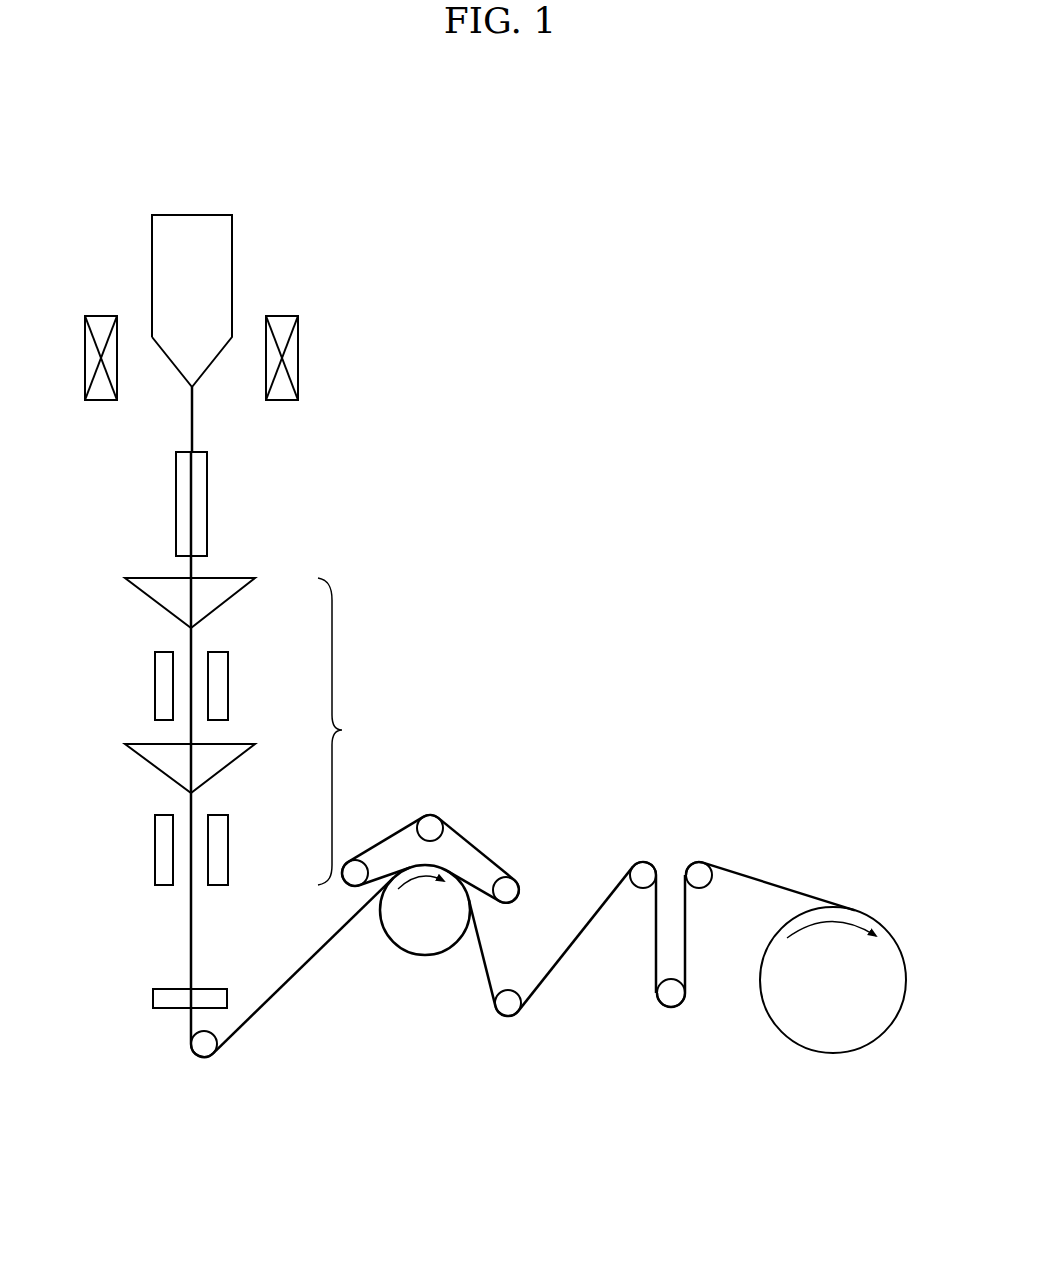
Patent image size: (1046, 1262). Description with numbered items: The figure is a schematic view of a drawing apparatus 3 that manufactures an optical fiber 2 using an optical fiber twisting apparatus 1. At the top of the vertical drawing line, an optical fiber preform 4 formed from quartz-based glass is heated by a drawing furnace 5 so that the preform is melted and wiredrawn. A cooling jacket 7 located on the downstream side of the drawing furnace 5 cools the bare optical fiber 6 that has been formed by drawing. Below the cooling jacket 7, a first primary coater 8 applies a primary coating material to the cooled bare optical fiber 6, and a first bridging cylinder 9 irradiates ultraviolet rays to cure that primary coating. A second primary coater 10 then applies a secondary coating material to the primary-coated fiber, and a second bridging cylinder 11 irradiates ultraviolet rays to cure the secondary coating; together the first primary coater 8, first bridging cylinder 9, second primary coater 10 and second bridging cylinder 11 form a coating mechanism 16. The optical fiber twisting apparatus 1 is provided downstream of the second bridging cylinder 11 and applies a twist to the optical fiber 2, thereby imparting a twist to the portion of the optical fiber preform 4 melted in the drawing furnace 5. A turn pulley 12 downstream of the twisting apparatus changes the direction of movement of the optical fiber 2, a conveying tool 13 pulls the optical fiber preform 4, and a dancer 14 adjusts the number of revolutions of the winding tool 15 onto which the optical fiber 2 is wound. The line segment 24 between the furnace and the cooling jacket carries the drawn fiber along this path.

The optical fiber twisting apparatus 1 is at (208, 988).
The optical fiber 2 is at (188, 928).
The drawing apparatus 3 is at (480, 598).
The optical fiber preform 4 is at (232, 265).
The drawing furnace 5 is at (298, 355).
The bare optical fiber 6 is at (193, 415).
The cooling jacket 7 is at (207, 498).
The first primary coater 8 is at (243, 590).
The first bridging cylinder 9 is at (228, 683).
The second primary coater 10 is at (240, 755).
The second bridging cylinder 11 is at (228, 845).
The turn pulley 12 is at (190, 1045).
The conveying tool 13 is at (442, 806).
The dancer 14 is at (671, 1007).
The winding tool 15 is at (833, 1053).
The coating mechanism 16 is at (349, 731).
The wire 24 is at (190, 437).